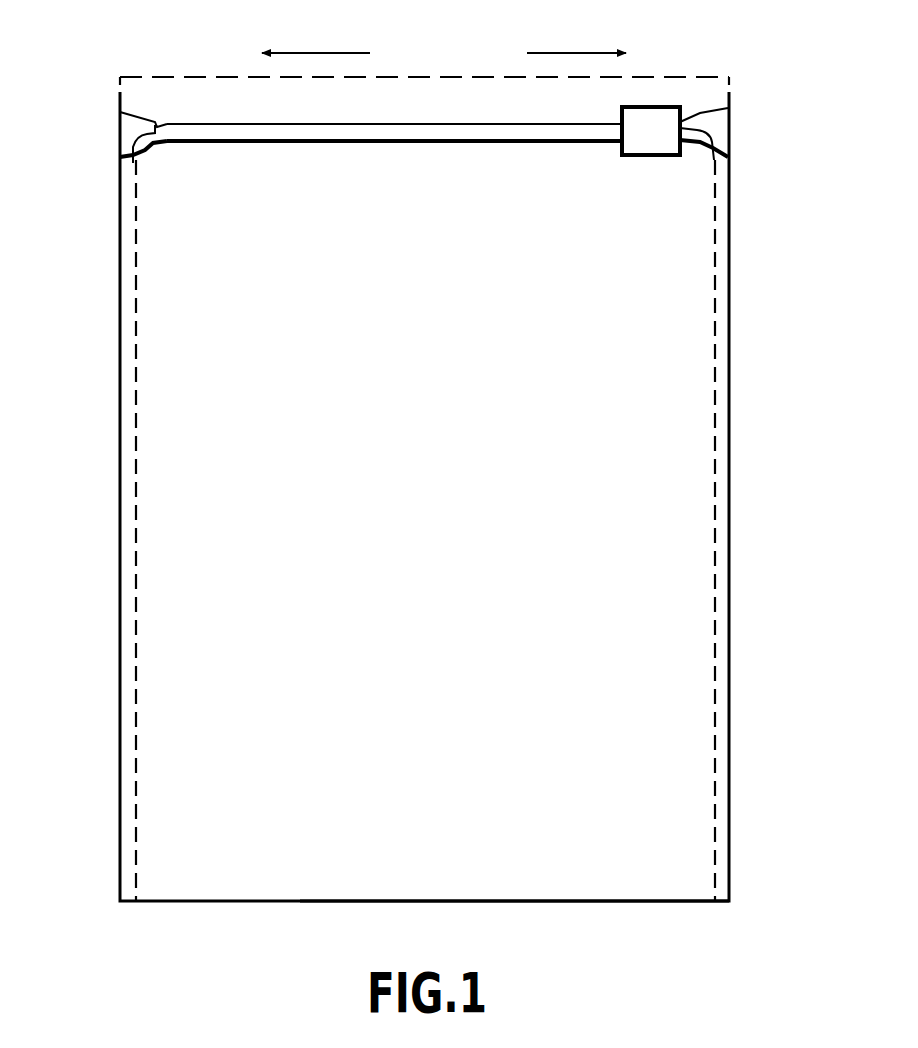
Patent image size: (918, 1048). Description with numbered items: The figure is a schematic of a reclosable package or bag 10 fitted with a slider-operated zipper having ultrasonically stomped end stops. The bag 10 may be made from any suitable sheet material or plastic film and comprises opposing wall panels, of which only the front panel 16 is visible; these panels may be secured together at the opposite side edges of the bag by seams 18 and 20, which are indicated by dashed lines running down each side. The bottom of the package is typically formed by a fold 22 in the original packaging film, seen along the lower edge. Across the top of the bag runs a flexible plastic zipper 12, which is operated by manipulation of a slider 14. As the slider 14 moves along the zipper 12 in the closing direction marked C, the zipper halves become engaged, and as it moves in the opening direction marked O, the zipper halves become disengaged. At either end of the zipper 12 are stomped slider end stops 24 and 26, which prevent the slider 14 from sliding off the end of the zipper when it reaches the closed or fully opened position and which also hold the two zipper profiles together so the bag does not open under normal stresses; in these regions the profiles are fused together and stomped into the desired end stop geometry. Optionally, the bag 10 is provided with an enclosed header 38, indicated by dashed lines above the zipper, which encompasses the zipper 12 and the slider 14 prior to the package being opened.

The reclosable package or bag 10 is at (783, 267).
The flexible plastic zipper 12 is at (190, 133).
The slider 14 is at (648, 107).
The front panel 16 is at (683, 632).
The seam 18 is at (137, 623).
The seam 20 is at (715, 415).
The fold 22 is at (603, 902).
The end stop 24 is at (125, 143).
The end stop 26 is at (726, 103).
The enclosed header 38 is at (420, 74).